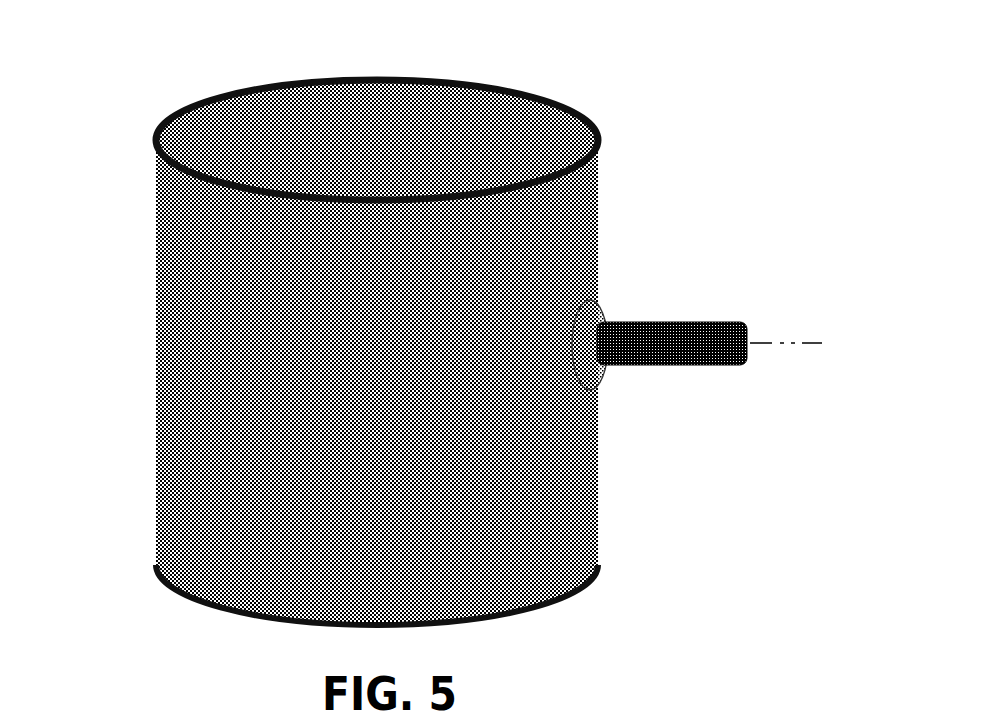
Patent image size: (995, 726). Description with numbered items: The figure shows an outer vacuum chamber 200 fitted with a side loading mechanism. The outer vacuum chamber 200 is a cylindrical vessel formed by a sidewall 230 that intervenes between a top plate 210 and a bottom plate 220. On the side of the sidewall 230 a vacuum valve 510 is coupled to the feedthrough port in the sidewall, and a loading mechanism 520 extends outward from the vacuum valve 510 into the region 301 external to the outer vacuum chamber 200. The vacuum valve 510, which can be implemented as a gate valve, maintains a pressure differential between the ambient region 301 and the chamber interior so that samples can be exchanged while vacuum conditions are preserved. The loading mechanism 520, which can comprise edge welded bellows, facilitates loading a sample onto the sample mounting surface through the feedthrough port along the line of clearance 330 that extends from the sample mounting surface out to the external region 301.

The outer vacuum chamber 200 is at (465, 359).
The top plate 210 is at (390, 146).
The bottom plate 220 is at (206, 608).
The sidewall 230 is at (390, 386).
The region external to outer vacuum chamber 301 is at (83, 492).
The line of clearance 330 is at (806, 345).
The vacuum valve 510 is at (576, 332).
The loading mechanism 520 is at (667, 367).